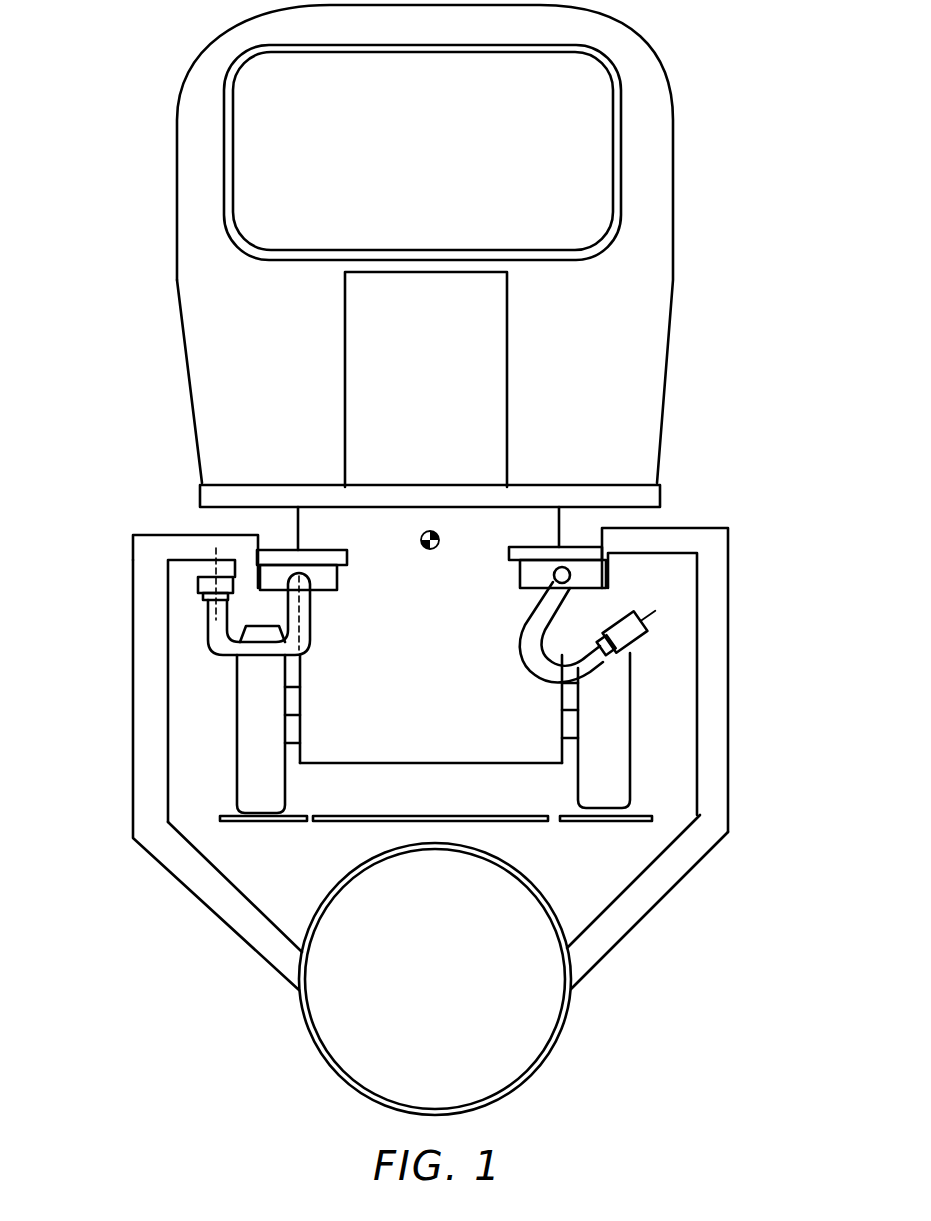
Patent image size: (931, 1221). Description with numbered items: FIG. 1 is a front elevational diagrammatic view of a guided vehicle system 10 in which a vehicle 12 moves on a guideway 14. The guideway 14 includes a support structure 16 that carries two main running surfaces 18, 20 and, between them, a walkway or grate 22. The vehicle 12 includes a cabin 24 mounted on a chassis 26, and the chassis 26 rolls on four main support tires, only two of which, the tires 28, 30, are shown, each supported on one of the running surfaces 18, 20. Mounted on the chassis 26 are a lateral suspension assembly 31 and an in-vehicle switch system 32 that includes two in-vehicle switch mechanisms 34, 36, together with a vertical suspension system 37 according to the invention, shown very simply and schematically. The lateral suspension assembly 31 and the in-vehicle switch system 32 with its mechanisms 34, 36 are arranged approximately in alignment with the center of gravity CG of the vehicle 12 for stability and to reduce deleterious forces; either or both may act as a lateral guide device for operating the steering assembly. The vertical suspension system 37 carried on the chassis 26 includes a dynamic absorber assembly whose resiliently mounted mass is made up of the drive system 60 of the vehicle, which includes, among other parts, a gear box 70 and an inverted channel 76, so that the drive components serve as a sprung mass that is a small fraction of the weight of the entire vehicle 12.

The guided vehicle system 10 is at (110, 31).
The vehicle 12 is at (488, 277).
The guideway 14 is at (487, 759).
The support structure 16 is at (657, 908).
The main running surface 18 is at (268, 823).
The main running surface 20 is at (602, 822).
The walkway or grate 22 is at (364, 823).
The cabin 24 is at (658, 82).
The chassis 26 is at (562, 515).
The main support tire 28 is at (255, 738).
The main support tire 30 is at (608, 771).
The lateral suspension assembly 31 is at (158, 511).
The in-vehicle switch system 32 is at (431, 733).
The in-vehicle switch mechanism 34 is at (296, 641).
The in-vehicle switch mechanism 36 is at (561, 642).
The vertical suspension system 37 is at (431, 787).
The drive system 60 is at (568, 593).
The gear box 70 is at (197, 578).
The inverted channel 76 is at (608, 565).
The center of gravity CG is at (430, 531).